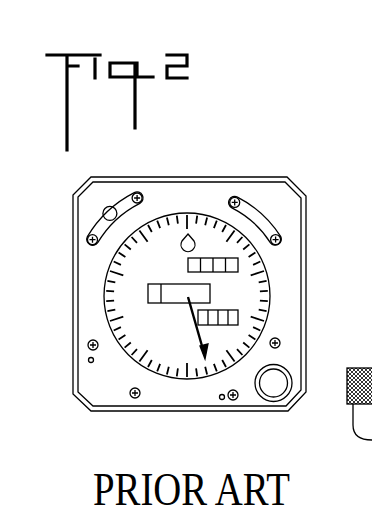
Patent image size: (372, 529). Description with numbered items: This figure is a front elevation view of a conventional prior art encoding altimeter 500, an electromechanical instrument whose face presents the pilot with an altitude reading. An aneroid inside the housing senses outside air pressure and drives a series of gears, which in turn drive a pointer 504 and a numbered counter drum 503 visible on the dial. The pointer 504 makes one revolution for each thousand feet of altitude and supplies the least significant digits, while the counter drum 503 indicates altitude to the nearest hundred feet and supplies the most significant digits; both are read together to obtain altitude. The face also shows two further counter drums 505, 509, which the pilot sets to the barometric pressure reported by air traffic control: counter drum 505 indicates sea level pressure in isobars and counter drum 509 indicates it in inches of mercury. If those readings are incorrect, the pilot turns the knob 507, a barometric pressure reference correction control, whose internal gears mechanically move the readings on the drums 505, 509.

The encoding altimeter 500 is at (257, 140).
The counter drum 503 is at (210, 290).
The pointer 504 is at (205, 337).
The counter drum 505 is at (212, 258).
The knob 507 is at (274, 385).
The counter drum 509 is at (238, 309).